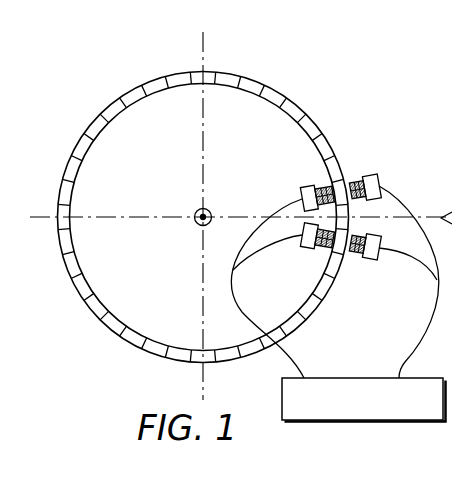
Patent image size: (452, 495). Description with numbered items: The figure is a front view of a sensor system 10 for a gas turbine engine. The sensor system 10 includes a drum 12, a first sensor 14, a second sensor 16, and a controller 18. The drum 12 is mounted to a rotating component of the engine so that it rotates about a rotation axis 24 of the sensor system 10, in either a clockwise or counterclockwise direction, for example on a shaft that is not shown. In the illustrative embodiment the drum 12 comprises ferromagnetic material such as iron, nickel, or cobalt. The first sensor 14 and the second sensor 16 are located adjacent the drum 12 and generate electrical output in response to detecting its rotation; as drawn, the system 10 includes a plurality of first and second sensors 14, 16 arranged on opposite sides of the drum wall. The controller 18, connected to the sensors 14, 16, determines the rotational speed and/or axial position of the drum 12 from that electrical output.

The sensor system 10 is at (88, 43).
The drum 12 is at (74, 131).
The first sensor 14 is at (307, 180).
The second sensor 16 is at (363, 170).
The controller 18 is at (398, 420).
The rotation axis 24 is at (195, 213).